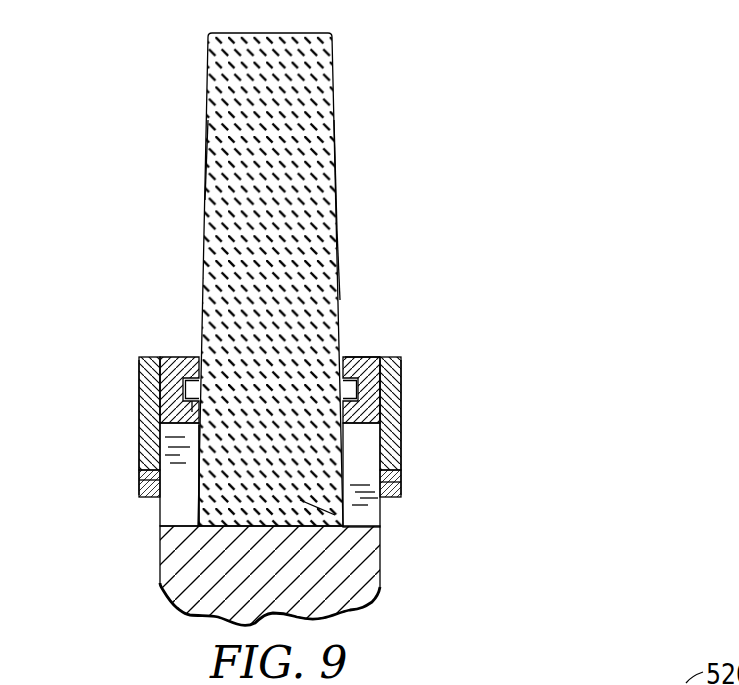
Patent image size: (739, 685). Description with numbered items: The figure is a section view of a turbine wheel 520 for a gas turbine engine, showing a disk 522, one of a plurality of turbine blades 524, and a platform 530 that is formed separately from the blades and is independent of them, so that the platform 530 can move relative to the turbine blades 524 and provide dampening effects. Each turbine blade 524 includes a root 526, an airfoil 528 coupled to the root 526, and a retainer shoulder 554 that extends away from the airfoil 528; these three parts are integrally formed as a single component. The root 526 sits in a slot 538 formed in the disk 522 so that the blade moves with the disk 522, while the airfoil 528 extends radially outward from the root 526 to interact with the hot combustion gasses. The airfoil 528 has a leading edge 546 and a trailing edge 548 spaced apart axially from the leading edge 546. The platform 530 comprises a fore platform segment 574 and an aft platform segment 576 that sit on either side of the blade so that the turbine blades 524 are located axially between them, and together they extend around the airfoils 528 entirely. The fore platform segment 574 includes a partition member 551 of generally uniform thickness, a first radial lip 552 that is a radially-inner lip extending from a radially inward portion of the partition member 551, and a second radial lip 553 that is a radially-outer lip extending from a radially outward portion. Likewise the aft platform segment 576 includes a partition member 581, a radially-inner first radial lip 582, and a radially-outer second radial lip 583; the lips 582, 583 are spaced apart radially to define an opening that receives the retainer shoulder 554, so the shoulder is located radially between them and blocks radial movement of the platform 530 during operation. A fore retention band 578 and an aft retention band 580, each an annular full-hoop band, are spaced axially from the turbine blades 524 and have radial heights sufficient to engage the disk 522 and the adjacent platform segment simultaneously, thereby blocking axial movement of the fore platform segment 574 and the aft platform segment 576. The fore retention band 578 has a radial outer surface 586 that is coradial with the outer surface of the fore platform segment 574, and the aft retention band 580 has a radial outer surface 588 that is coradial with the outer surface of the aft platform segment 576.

The turbine wheel 520 is at (600, 98).
The disk 522 is at (185, 576).
The turbine blade 524 is at (184, 80).
The root 526 is at (325, 510).
The airfoil 528 is at (338, 205).
The platform 530 is at (160, 345).
The slot 538 is at (150, 523).
The leading edge 546 is at (204, 163).
The trailing edge 548 is at (340, 272).
The partition member 551 is at (185, 402).
The first radial lip 552 is at (184, 378).
The second radial lip 553 is at (150, 489).
The retainer shoulder 554 is at (198, 425).
The fore platform segment 574 is at (133, 386).
The aft platform segment 576 is at (398, 384).
The fore retention band 578 is at (130, 418).
The aft retention band 580 is at (416, 447).
The partition member 581 is at (372, 357).
The first radial lip 582 is at (358, 372).
The second radial lip 583 is at (360, 405).
The radial outer surface 586 is at (146, 357).
The radial outer surface 588 is at (392, 357).